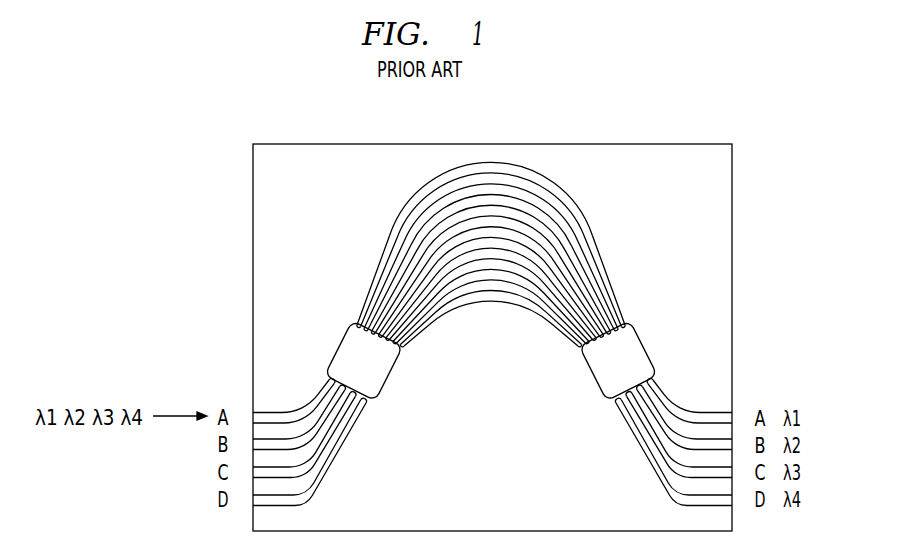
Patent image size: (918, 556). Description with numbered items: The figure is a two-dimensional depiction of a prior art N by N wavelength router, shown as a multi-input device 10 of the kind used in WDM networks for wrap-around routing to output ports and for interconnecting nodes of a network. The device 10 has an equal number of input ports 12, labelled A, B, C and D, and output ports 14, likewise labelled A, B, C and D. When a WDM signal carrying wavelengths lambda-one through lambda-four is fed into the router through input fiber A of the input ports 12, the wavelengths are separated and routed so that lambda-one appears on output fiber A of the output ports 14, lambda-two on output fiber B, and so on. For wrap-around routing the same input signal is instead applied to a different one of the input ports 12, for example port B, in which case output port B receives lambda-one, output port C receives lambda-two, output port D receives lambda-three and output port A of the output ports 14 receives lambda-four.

The multi-input device 10 is at (738, 279).
The input ports 12 is at (238, 400).
The output ports 14 is at (748, 400).